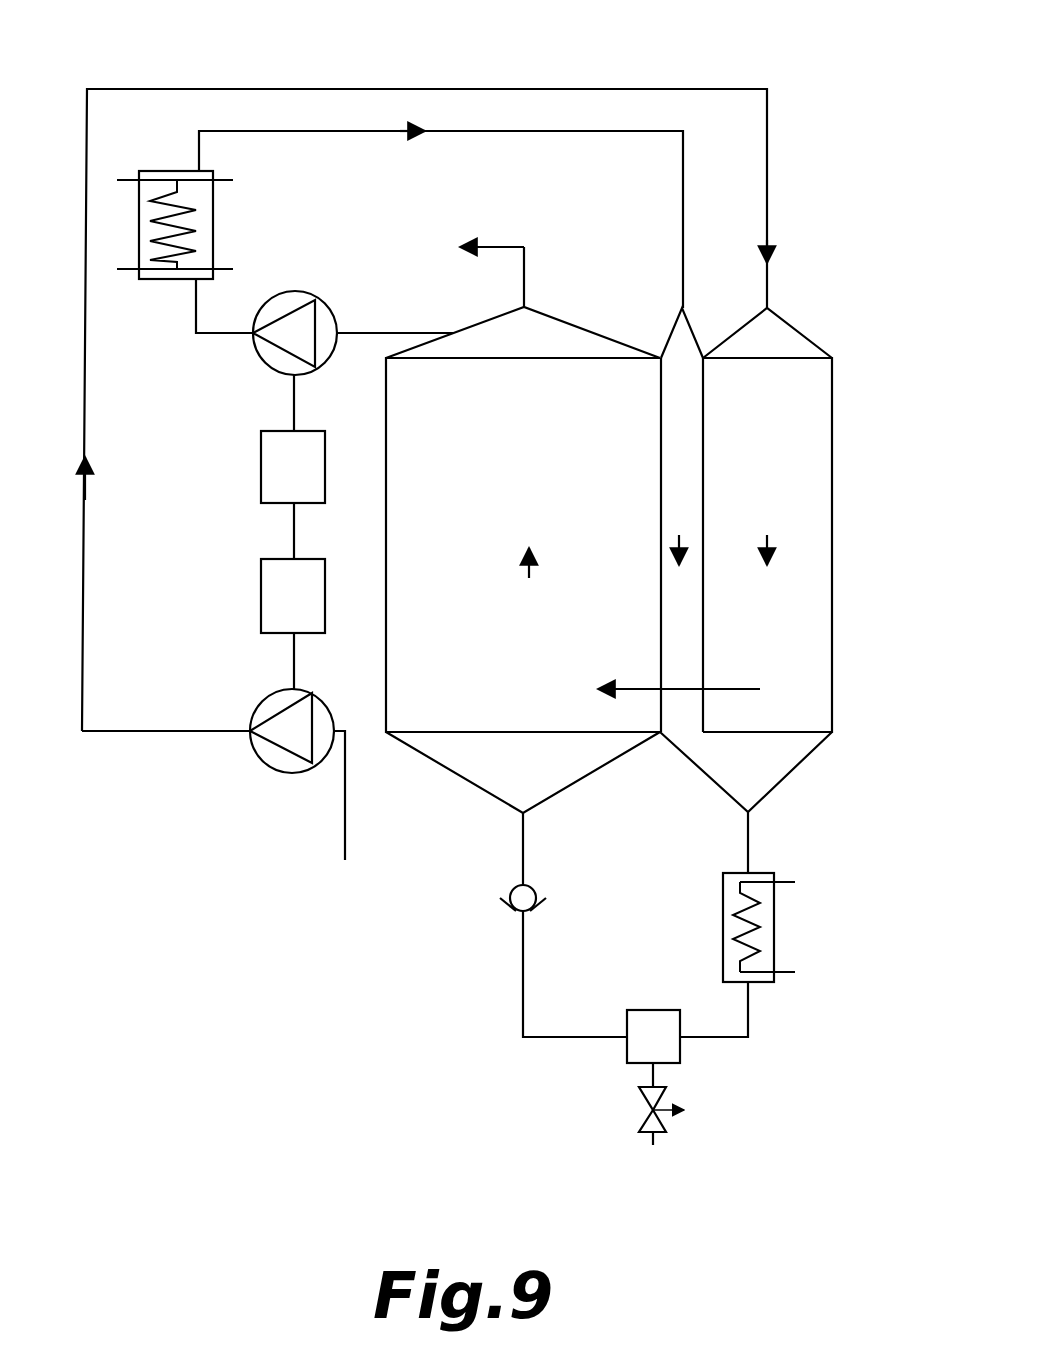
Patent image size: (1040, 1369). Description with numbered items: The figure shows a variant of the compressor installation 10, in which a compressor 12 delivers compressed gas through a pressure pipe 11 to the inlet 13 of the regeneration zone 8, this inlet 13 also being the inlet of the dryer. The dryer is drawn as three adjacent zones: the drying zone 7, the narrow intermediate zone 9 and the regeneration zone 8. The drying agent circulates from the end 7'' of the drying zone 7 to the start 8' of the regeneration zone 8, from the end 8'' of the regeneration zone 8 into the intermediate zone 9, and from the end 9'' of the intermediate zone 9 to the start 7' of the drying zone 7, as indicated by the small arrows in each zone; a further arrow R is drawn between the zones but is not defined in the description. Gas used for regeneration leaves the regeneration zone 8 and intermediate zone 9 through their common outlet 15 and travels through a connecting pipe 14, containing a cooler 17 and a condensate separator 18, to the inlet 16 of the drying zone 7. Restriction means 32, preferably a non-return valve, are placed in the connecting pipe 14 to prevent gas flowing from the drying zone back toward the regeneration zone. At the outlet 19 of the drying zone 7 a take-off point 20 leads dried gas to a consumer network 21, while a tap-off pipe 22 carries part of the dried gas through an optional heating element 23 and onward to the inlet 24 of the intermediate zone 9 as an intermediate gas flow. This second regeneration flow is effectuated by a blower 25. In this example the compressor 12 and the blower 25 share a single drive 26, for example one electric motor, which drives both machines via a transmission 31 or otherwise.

The drying zone 7 is at (523, 545).
The start of the drying zone 7' is at (637, 547).
The end of the drying zone 7'' is at (417, 547).
The regeneration zone 8 is at (767, 545).
The start of the regeneration zone 8' is at (816, 545).
The end of the regeneration zone 8'' is at (729, 545).
The intermediate zone 9 is at (682, 545).
The end of the intermediate zone 9'' is at (678, 624).
The compressor installation 10 is at (852, 38).
The pressure pipe 11 is at (768, 282).
The compressor 12 is at (273, 757).
The inlet of the regeneration zone 13 is at (800, 330).
The connecting pipe 14 is at (520, 1015).
The common outlet 15 is at (793, 773).
The inlet of the drying zone 16 is at (465, 782).
The cooler 17 is at (763, 927).
The condensate separator 18 is at (667, 1047).
The outlet of the drying zone 19 is at (555, 317).
The take-off point 20 is at (523, 305).
The consumer network 21 is at (494, 234).
The tap-off pipe 22 is at (317, 131).
The heating element 23 is at (203, 250).
The inlet of the intermediate zone 24 is at (696, 333).
The blower 25 is at (293, 373).
The drive 26 is at (303, 473).
The transmission 31 is at (275, 605).
The restriction means 32 is at (508, 907).
The flow direction R is at (667, 689).